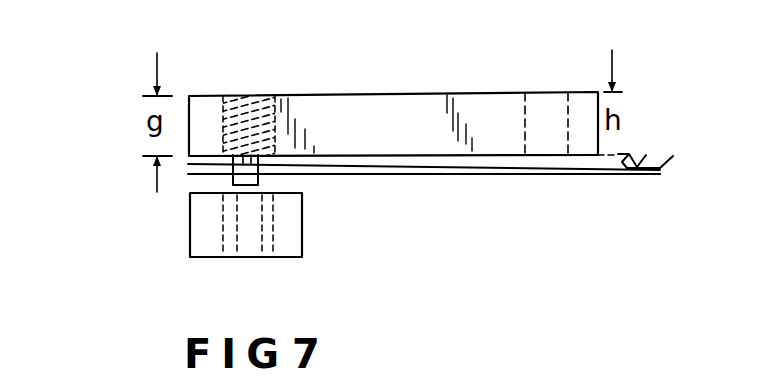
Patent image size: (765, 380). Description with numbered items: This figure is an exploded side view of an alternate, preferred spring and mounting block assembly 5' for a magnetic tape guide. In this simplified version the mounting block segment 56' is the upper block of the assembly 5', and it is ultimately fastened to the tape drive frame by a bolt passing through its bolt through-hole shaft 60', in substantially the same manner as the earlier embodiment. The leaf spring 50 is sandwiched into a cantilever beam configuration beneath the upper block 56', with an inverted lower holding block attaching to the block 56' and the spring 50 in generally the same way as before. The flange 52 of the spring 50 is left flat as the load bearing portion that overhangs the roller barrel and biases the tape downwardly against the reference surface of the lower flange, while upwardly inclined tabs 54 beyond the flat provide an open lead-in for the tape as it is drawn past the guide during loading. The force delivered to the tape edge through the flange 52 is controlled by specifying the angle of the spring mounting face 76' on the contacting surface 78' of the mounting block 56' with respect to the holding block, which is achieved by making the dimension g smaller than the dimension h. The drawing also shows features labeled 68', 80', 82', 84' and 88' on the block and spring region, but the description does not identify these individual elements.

The spring and mounting block assembly 5' is at (57, 26).
The leaf spring 50 is at (483, 175).
The flange 52 is at (618, 176).
The upwardly inclined tabs 54 is at (633, 153).
The mounting block segment 56' is at (403, 124).
The bolt through-hole shaft 60' is at (537, 94).
The lead 68' is at (164, 201).
The spring mounting face 76' is at (339, 186).
The contacting surface 78' is at (309, 201).
The terminal 80' is at (228, 251).
The terminal 82' is at (276, 251).
The terminal housing 84' is at (223, 250).
The hatched bonding region 88' is at (272, 101).